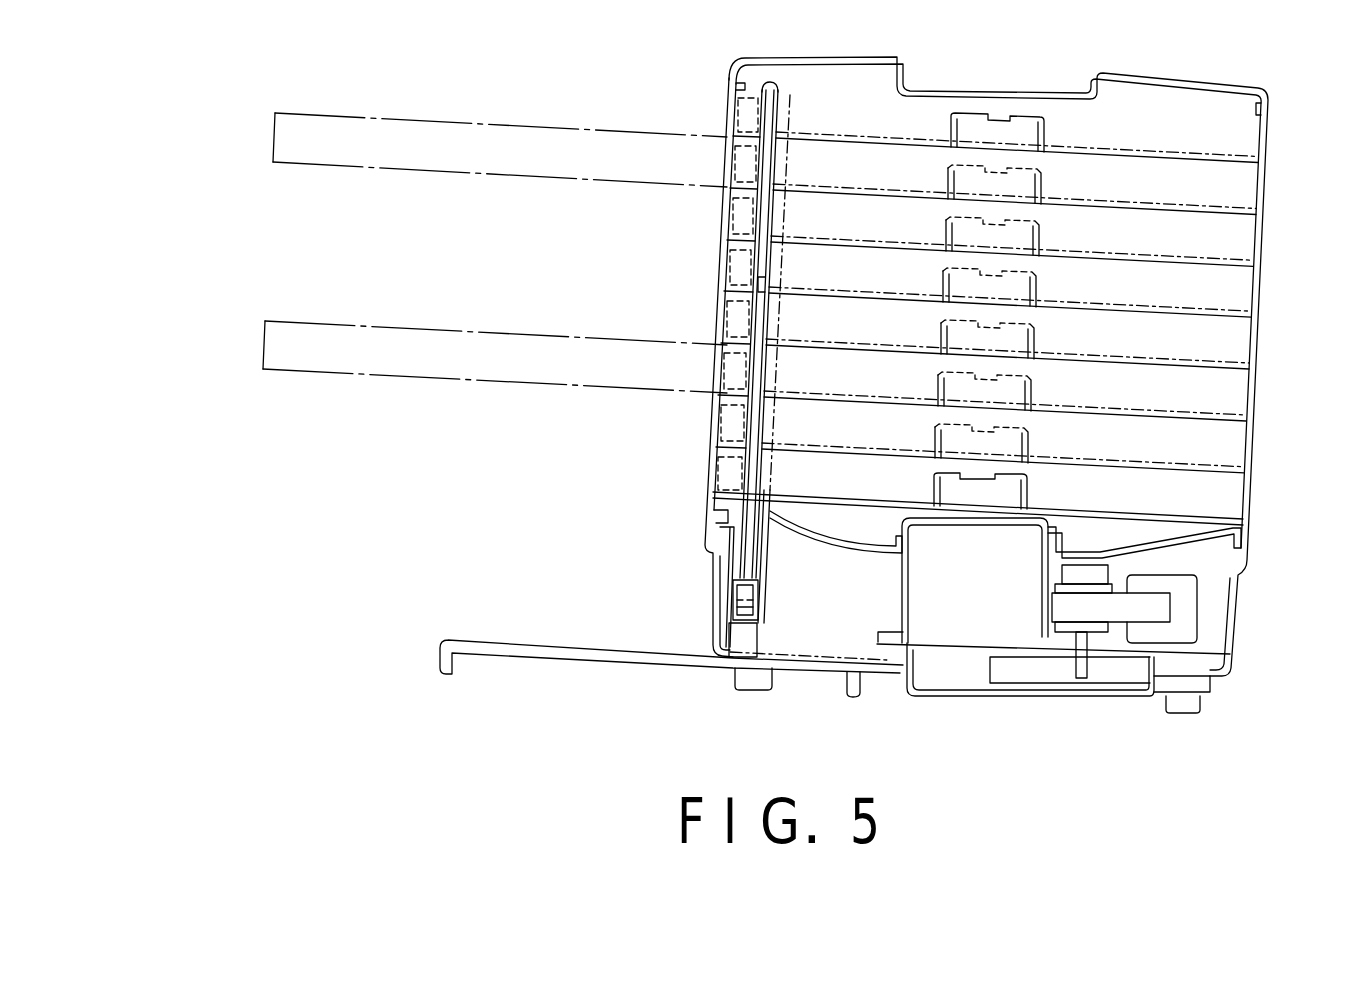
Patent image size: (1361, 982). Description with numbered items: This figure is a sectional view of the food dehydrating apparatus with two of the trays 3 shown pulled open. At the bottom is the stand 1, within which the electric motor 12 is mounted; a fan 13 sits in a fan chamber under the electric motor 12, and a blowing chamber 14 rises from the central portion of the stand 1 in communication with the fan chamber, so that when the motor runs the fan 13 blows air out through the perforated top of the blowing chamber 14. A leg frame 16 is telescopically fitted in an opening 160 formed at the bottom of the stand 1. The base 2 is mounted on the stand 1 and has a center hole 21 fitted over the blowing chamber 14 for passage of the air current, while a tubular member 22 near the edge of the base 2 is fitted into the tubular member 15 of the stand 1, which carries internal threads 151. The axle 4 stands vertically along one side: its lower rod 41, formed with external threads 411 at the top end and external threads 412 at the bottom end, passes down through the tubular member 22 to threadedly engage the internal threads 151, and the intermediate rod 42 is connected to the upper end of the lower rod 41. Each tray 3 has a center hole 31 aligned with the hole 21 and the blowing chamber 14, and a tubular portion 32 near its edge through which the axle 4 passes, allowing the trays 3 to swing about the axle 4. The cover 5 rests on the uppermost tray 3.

The stand 1 is at (887, 668).
The base 2 is at (1248, 540).
The trays 3 is at (527, 165).
The axle 4 is at (719, 337).
The cover 5 is at (1190, 86).
The electric motor 12 is at (1092, 607).
The fan 13 is at (1033, 673).
The blowing chamber 14 is at (933, 605).
The tubular member 15 is at (760, 580).
The leg frame 16 is at (509, 650).
The center hole 21 is at (902, 533).
The tubular member 22 is at (728, 515).
The center hole 31 is at (1028, 132).
The tubular portion 32 is at (784, 123).
The lower rod 41 is at (756, 373).
The intermediate rod 42 is at (768, 122).
The internal threads 151 is at (675, 614).
The opening 160 is at (703, 672).
The external threads 411 is at (758, 283).
The external threads 412 is at (737, 600).